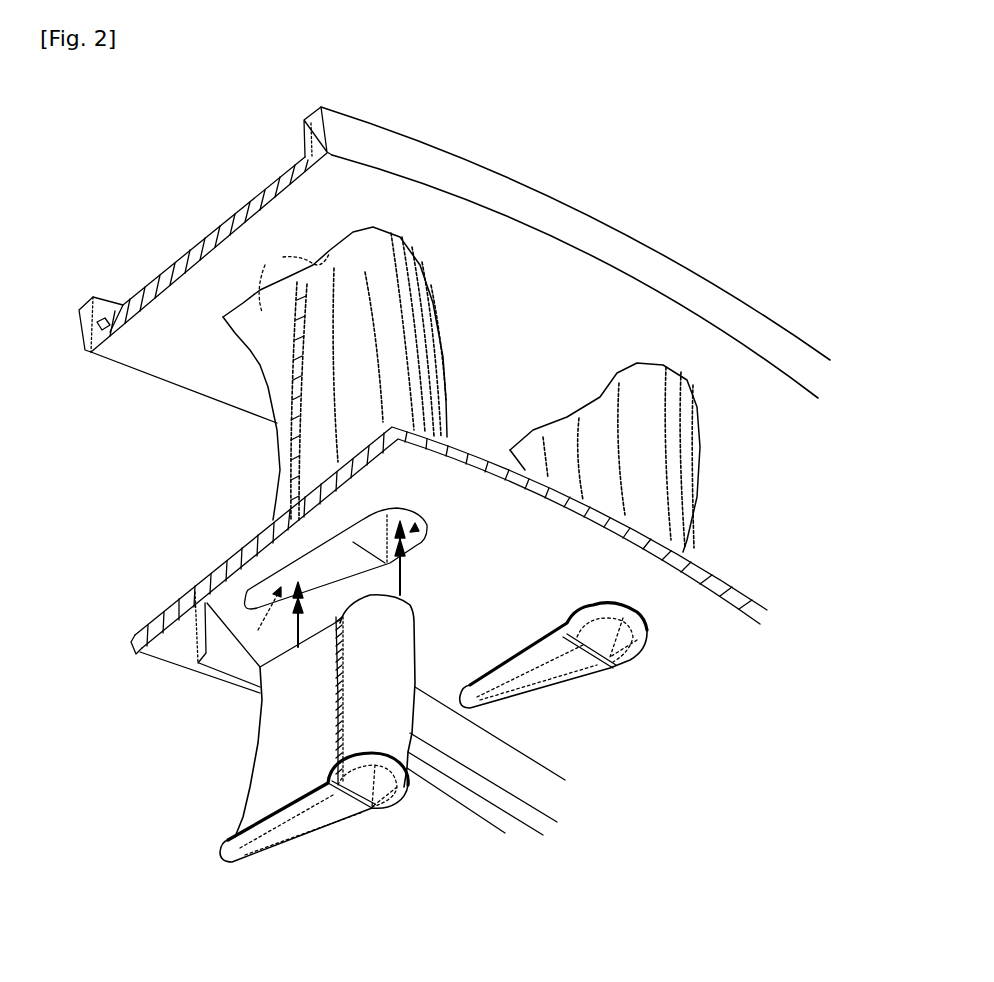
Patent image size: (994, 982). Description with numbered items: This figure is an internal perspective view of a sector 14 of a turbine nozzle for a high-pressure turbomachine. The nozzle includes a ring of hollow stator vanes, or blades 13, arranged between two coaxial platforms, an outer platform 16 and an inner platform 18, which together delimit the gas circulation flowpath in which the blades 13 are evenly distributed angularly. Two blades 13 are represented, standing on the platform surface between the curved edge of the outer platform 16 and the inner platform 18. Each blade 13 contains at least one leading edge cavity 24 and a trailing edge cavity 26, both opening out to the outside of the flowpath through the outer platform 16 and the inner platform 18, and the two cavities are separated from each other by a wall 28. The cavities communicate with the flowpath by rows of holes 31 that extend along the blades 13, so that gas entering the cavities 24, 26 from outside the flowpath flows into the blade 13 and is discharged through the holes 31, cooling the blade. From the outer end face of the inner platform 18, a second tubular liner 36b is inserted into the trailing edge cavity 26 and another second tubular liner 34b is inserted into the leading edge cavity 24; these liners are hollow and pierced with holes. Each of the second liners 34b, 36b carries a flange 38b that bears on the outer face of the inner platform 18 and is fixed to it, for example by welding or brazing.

The hollow stator vane 13 is at (285, 472).
The sector of a turbine nozzle 14 is at (700, 232).
The outer platform 16 is at (748, 430).
The inner platform 18 is at (693, 663).
The leading edge cavity 24 is at (420, 551).
The trailing edge cavity 26 is at (256, 616).
The wall 28 is at (352, 560).
The holes 31 is at (294, 277).
The second tubular liner 34b is at (388, 782).
The second tubular liner 36b is at (248, 813).
The flange 38b is at (378, 770).